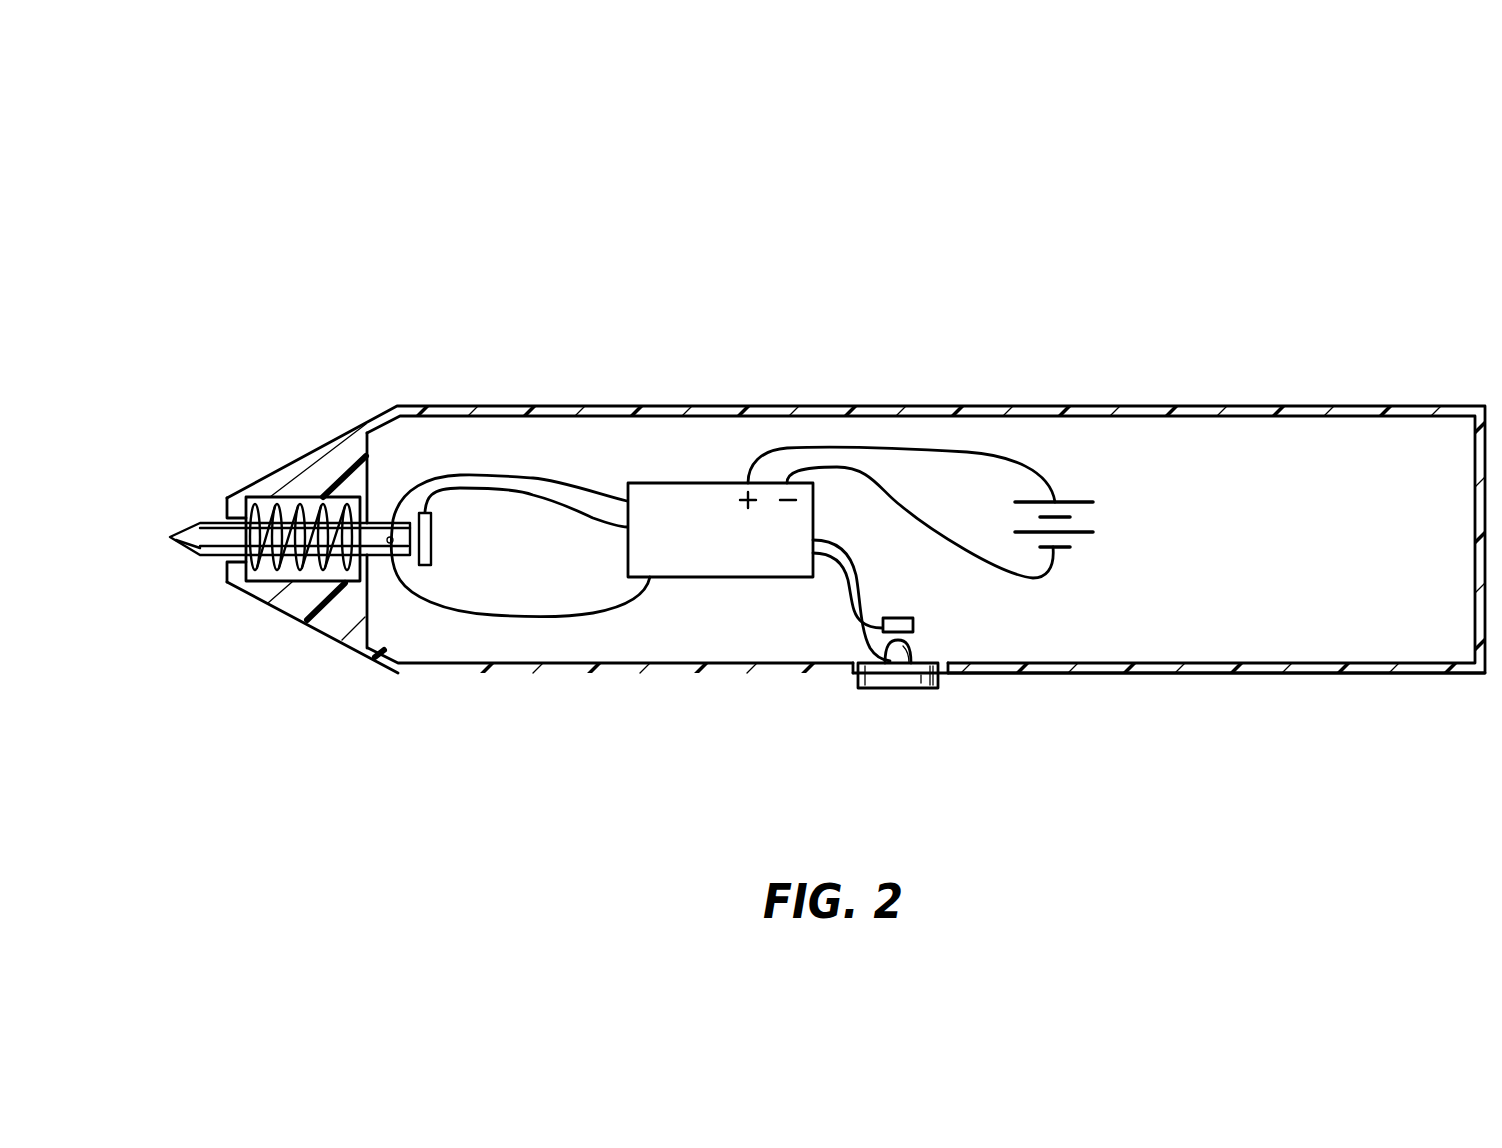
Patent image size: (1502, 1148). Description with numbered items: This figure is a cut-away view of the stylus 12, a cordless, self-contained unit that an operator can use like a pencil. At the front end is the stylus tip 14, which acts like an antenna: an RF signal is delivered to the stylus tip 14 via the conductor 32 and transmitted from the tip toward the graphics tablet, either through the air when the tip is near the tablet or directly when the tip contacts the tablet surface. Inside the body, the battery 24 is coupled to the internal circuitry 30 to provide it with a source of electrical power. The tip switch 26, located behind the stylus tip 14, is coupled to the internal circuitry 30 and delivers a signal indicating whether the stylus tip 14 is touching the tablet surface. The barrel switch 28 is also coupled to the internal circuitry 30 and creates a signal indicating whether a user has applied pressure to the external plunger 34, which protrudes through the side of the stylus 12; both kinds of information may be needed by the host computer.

The stylus 12 is at (1015, 243).
The stylus tip 14 is at (192, 556).
The battery 24 is at (1071, 492).
The tip switch 26 is at (392, 496).
The barrel switch 28 is at (940, 640).
The internal circuitry 30 is at (699, 483).
The conductor 32 is at (567, 613).
The external plunger 34 is at (877, 688).